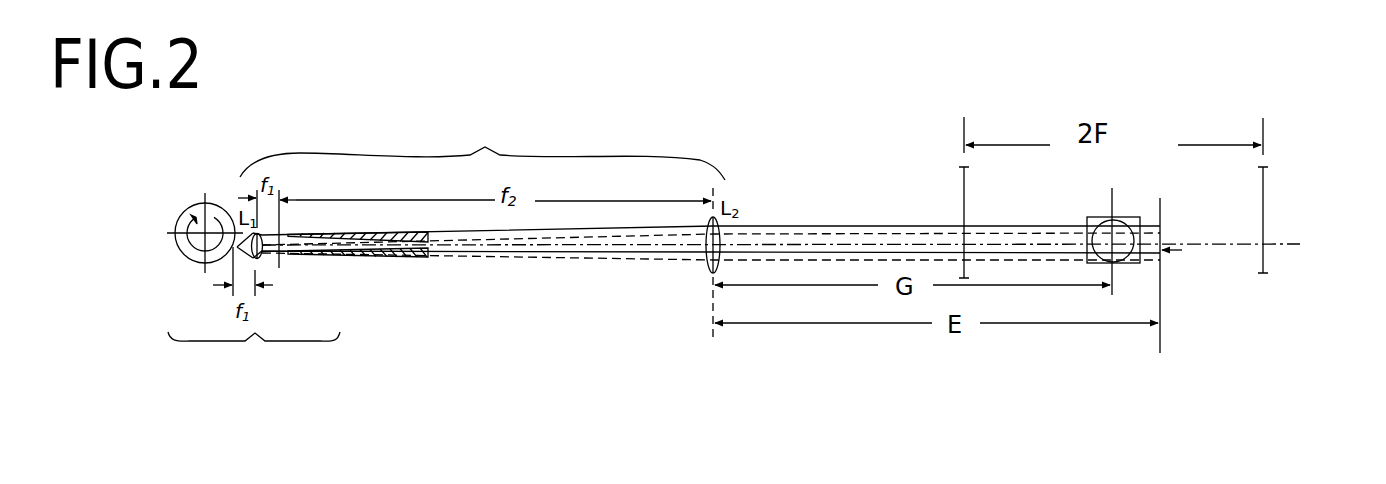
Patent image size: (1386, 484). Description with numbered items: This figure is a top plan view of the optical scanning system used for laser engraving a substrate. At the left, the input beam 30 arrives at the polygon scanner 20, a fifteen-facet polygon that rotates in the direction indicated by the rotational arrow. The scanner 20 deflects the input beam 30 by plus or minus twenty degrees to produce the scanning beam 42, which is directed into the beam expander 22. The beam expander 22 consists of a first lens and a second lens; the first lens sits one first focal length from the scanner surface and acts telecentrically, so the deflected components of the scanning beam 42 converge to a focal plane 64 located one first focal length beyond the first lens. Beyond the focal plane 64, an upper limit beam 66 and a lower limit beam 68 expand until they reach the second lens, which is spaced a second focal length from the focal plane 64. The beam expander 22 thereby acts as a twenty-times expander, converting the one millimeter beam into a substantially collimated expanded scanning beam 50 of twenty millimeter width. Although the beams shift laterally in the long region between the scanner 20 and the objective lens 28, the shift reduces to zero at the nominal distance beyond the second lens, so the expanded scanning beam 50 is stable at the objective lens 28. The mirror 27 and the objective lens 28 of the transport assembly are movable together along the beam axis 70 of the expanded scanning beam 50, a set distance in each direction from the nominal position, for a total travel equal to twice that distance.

The polygon scanner 20 is at (187, 212).
The scanning beam 42 is at (210, 263).
The input beam 30 is at (241, 250).
The focal plane 64 is at (268, 256).
The upper limit beam 66 is at (428, 233).
The lower limit beam 68 is at (428, 257).
The beam expander 22 is at (482, 144).
The expanded scanning beam 50 is at (820, 223).
The objective lens 28 is at (1097, 220).
The mirror 27 is at (1132, 217).
The beam axis 70 is at (1210, 248).